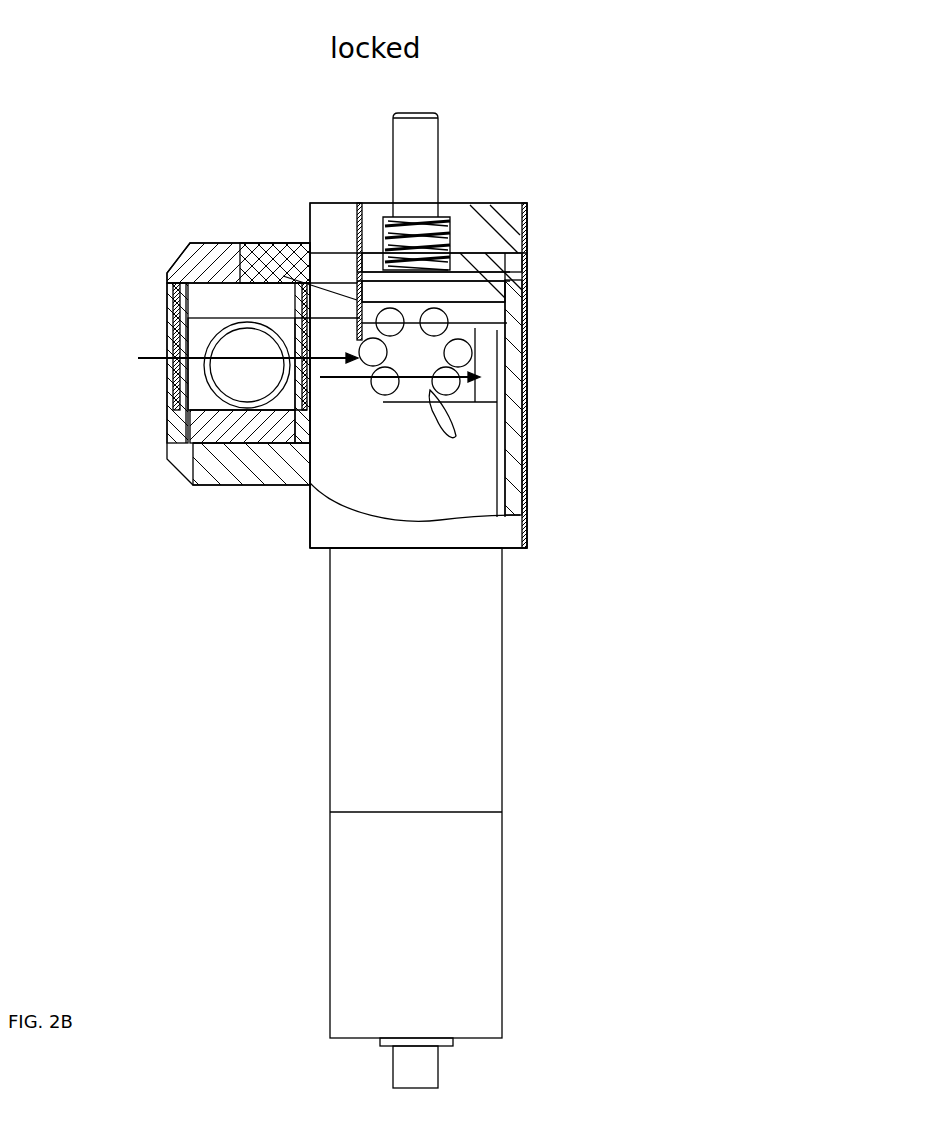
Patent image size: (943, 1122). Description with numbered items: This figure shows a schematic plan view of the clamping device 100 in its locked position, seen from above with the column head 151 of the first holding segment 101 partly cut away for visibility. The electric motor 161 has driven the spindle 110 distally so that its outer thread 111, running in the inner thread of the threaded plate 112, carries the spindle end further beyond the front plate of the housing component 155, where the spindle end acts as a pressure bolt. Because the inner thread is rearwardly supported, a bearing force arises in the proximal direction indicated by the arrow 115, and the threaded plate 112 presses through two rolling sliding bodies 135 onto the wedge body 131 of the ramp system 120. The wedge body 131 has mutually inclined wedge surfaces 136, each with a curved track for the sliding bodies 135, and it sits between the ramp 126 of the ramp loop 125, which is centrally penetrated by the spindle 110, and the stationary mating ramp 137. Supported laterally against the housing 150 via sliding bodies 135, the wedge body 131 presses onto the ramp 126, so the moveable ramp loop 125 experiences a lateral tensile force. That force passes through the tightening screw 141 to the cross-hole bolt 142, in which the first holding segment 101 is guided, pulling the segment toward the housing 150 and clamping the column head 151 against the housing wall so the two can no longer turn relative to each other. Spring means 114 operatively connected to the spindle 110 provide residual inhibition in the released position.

The clamping device 100 is at (508, 100).
The spindle 110 is at (413, 188).
The outer thread 111 is at (440, 233).
The threaded plate 112 is at (355, 283).
The spring means 114 is at (357, 268).
The arrow 115 is at (413, 306).
The housing component 155 is at (362, 234).
The ramp system 120 is at (138, 358).
The ramp loop 125 is at (490, 387).
The ramp 126 is at (472, 350).
The wedge body 131 is at (310, 322).
The sliding bodies 135 is at (190, 280).
The wedge surfaces 136 is at (451, 427).
The first holding segment 101 is at (227, 378).
The tightening screw 141 is at (215, 405).
The cross-hole bolt 142 is at (253, 432).
The column head 151 is at (257, 475).
The mating ramp 137 is at (377, 488).
The housing 150 is at (357, 533).
The electric motor 161 is at (400, 615).